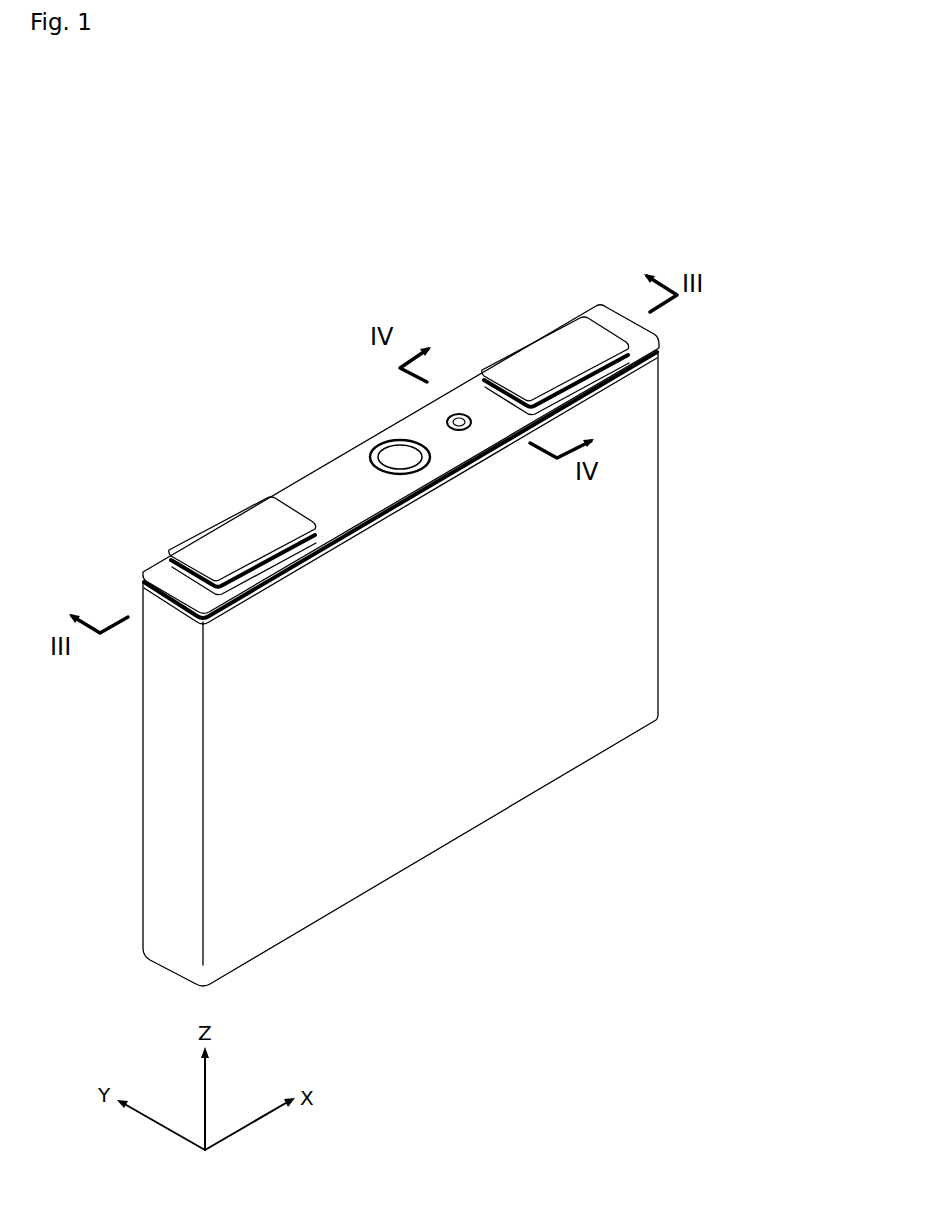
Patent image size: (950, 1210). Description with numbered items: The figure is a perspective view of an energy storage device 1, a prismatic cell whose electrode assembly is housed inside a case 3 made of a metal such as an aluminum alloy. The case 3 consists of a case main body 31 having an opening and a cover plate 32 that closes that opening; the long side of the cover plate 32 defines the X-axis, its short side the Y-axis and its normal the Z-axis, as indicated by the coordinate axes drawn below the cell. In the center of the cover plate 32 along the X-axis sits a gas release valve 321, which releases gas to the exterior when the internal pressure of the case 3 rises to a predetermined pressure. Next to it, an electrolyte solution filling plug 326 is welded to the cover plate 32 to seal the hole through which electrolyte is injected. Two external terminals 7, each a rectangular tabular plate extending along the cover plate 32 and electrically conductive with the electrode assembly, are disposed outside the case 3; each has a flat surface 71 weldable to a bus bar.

The energy storage device 1 is at (655, 210).
The case 3 is at (784, 404).
The case main body 31 is at (636, 513).
The cover plate 32 is at (646, 338).
The gas release valve 321 is at (382, 443).
The electrolyte solution filling plug 326 is at (449, 417).
The external terminal 7 is at (540, 360).
The surface 71 is at (578, 340).